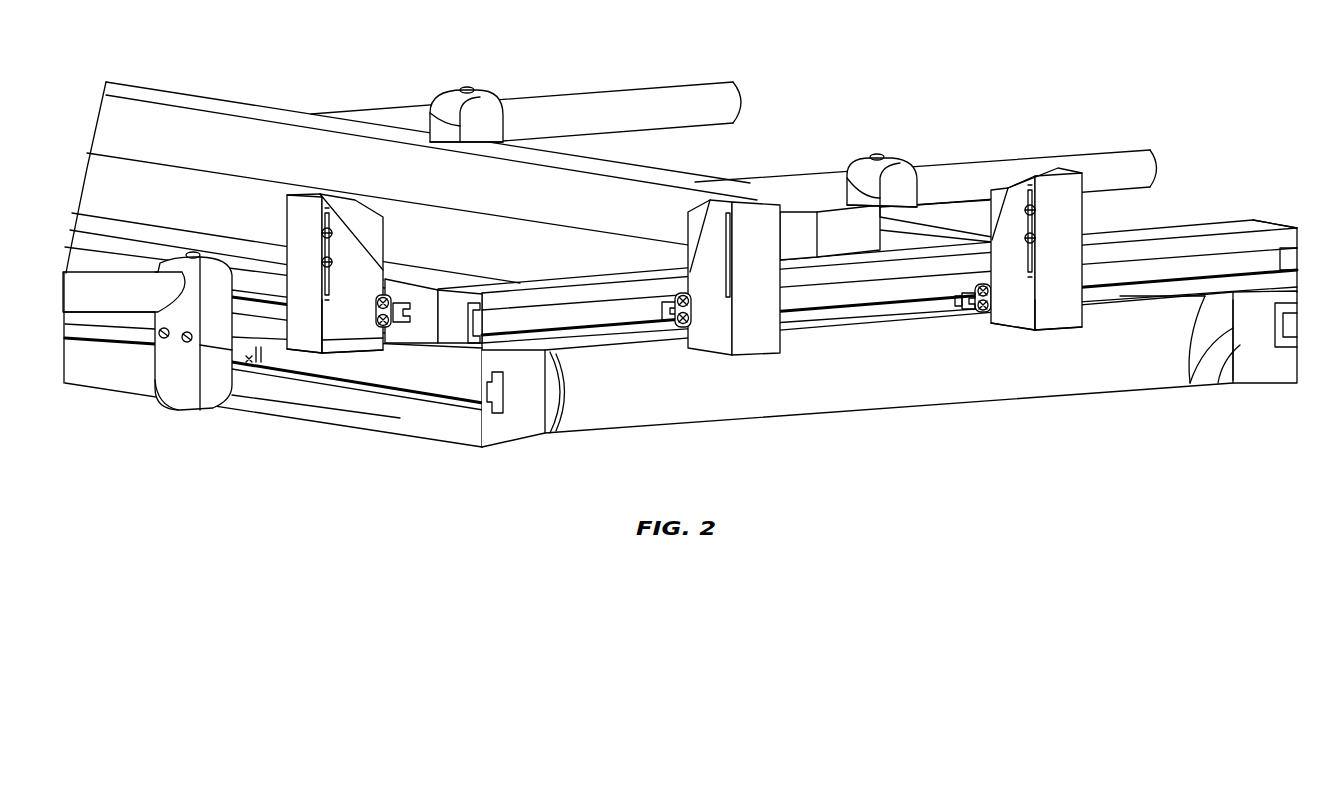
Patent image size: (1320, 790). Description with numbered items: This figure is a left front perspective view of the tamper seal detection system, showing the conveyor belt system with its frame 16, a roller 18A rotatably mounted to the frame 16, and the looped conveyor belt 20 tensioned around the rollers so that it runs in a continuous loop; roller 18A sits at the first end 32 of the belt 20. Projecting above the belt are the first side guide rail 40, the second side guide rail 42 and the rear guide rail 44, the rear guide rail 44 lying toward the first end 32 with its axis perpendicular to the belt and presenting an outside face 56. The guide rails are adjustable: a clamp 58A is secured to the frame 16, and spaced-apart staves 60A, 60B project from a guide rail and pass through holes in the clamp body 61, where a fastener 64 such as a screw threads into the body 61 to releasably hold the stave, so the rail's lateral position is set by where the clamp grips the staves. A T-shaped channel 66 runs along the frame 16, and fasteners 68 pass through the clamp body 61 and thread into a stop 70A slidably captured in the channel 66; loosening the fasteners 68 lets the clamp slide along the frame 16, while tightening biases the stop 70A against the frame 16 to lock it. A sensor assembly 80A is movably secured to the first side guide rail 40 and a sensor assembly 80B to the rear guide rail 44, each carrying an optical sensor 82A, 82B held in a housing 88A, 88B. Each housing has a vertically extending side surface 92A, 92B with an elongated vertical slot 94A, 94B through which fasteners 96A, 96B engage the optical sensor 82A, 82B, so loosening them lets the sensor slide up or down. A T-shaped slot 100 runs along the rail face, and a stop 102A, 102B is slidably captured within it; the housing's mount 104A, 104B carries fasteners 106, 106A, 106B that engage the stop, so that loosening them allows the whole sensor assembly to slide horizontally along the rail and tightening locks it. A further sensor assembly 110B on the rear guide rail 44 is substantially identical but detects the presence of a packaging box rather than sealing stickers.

The frame 16 is at (517, 442).
The roller 18A is at (1233, 385).
The conveyor belt 20 is at (203, 191).
The first end 32 is at (1228, 188).
The first side guide rail 40 is at (242, 270).
The second side guide rail 42 is at (645, 180).
The rear guide rail 44 is at (855, 272).
The outside face 56 is at (943, 290).
The clamp 58A is at (190, 358).
The stave 60A is at (88, 287).
The stave 60B is at (926, 183).
The body 61 is at (161, 392).
The fastener 64 is at (191, 251).
The T-shaped channel 66 is at (330, 337).
The fasteners 68 is at (178, 397).
The stop 70A is at (258, 365).
The sensor assembly 80A is at (276, 205).
The sensor assembly 80B is at (1098, 209).
The optical sensor 82A is at (378, 236).
The optical sensor 82B is at (995, 262).
The housing 88A is at (357, 368).
The housing 88B is at (1217, 343).
The side surface 92A is at (332, 322).
The side surface 92B is at (1067, 277).
The slot 94A is at (332, 217).
The slot 94B is at (1033, 200).
The fasteners 96A is at (333, 232).
The fasteners 96B is at (1029, 206).
The T-shaped slot 100 is at (428, 300).
The stop 102A is at (425, 295).
The stop 102B is at (957, 300).
The mount 104A is at (378, 330).
The mount 104B is at (973, 290).
The fasteners 106 is at (965, 300).
The fasteners 106A is at (380, 328).
The fasteners 106B is at (988, 298).
The sensor assembly 110B is at (777, 209).